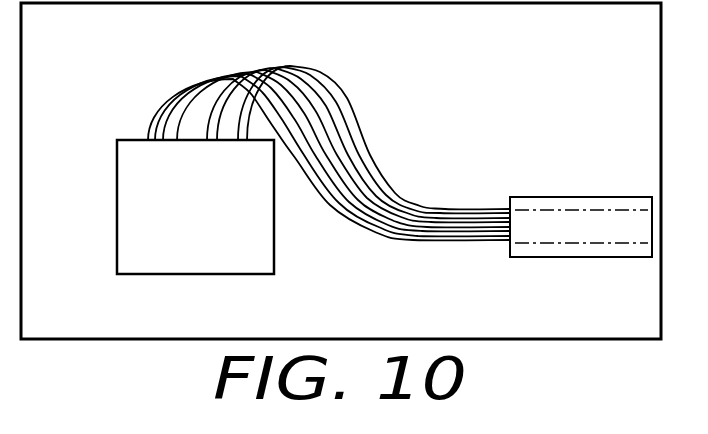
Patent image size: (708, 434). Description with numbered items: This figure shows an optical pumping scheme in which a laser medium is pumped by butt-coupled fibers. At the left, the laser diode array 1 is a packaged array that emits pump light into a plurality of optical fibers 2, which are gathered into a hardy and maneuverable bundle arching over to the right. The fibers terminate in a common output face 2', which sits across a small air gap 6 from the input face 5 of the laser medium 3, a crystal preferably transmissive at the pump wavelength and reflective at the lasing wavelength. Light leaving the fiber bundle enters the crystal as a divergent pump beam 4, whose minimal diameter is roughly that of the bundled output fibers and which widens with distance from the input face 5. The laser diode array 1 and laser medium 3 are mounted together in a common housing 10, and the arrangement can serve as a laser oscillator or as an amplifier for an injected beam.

The common housing 10 is at (83, 39).
The laser diode array 1 is at (117, 179).
The optical fibers 2 is at (329, 153).
The common output face 2' is at (464, 184).
The laser medium 3 is at (580, 197).
The divergent pump beam 4 is at (583, 246).
The input face 5 is at (510, 196).
The air gap 6 is at (508, 245).